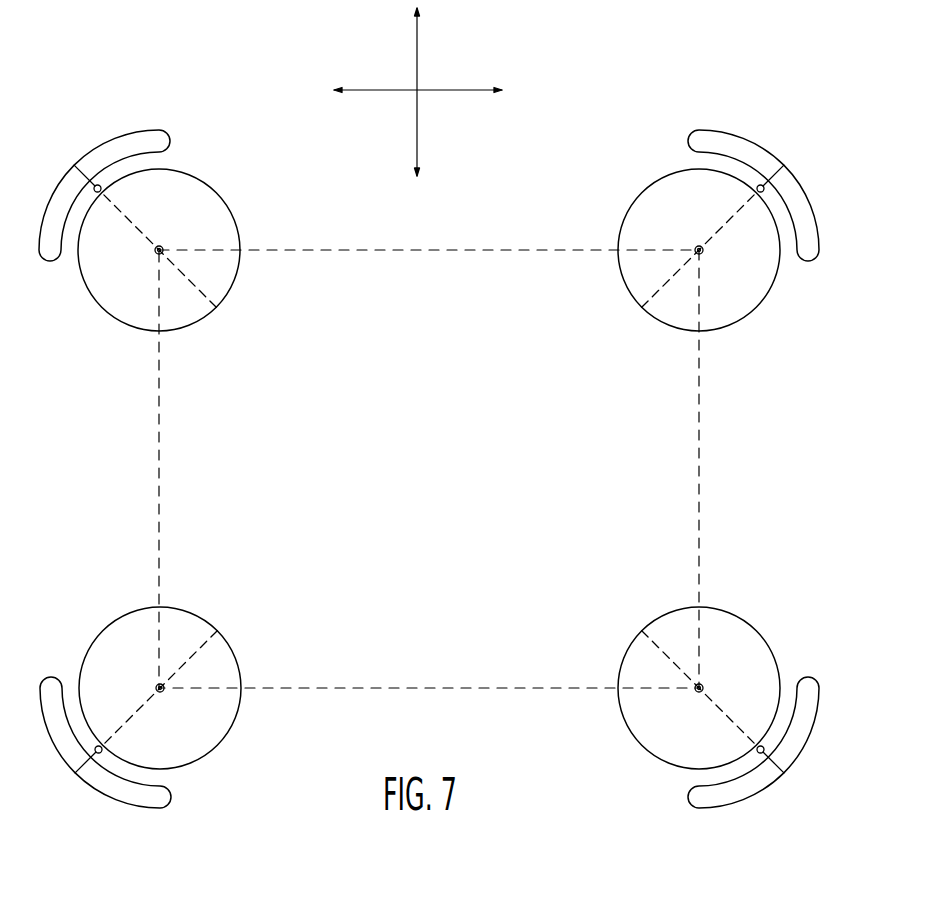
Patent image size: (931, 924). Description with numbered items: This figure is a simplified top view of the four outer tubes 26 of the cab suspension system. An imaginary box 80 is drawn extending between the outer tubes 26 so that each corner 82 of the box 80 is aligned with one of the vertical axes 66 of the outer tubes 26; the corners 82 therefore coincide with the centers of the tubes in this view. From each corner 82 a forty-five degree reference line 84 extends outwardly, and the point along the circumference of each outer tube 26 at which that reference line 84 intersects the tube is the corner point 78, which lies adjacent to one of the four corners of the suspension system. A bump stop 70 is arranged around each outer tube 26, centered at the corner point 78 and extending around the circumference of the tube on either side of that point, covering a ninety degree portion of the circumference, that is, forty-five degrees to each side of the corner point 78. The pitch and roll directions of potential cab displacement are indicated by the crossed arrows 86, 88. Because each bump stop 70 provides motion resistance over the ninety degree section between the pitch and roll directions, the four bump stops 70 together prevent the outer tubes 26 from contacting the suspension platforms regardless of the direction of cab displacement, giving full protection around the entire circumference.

The outer tube 26 is at (217, 188).
The vertical axis 66 is at (424, 515).
The bump stop 70 is at (120, 131).
The corner point 78 is at (101, 171).
The imaginary box 80 is at (152, 472).
The corner of the box 82 is at (155, 252).
The reference line 84 is at (137, 228).
The arrow indicating pitch direction 86 is at (469, 89).
The arrow indicating roll direction 88 is at (418, 124).